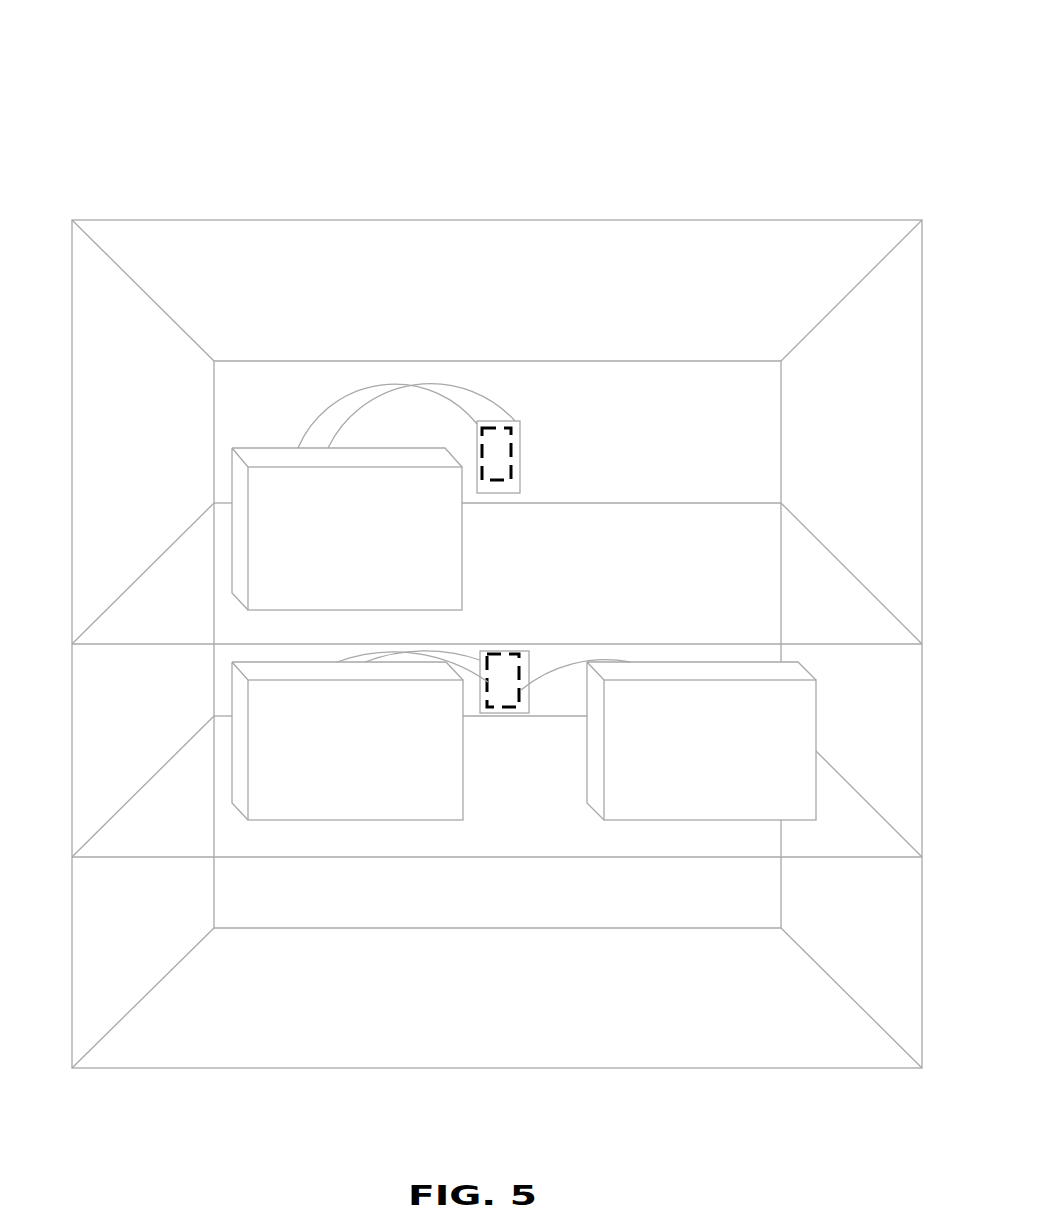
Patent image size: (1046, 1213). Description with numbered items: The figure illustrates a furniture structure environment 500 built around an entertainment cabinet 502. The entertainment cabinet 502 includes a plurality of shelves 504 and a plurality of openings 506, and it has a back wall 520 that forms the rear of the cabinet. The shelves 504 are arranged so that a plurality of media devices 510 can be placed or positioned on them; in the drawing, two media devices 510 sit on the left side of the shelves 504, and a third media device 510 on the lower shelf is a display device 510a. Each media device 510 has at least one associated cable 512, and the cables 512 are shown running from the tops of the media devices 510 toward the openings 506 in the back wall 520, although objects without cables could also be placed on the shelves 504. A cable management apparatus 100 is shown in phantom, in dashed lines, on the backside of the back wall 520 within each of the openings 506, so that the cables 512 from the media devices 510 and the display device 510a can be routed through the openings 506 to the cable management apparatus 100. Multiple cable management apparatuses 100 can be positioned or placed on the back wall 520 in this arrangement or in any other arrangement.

The furniture structure environment 500 is at (498, 88).
The entertainment cabinet 502 is at (603, 220).
The shelves 504 is at (108, 645).
The openings 506 is at (497, 422).
The cable management apparatus 100 is at (508, 440).
The media devices 510 is at (378, 553).
The display device 510a is at (738, 800).
The cable 512 is at (445, 385).
The back wall 520 is at (697, 480).